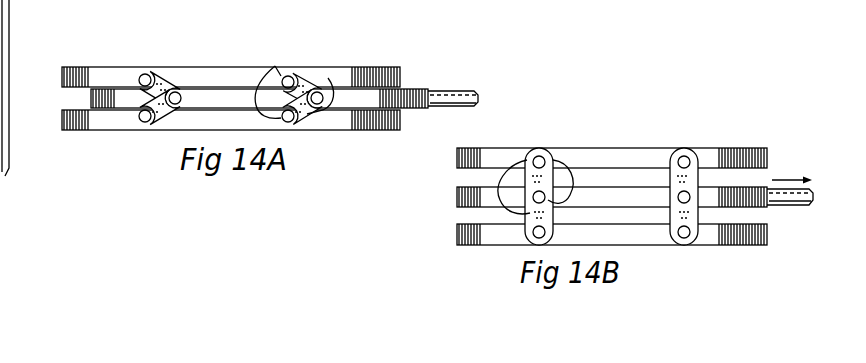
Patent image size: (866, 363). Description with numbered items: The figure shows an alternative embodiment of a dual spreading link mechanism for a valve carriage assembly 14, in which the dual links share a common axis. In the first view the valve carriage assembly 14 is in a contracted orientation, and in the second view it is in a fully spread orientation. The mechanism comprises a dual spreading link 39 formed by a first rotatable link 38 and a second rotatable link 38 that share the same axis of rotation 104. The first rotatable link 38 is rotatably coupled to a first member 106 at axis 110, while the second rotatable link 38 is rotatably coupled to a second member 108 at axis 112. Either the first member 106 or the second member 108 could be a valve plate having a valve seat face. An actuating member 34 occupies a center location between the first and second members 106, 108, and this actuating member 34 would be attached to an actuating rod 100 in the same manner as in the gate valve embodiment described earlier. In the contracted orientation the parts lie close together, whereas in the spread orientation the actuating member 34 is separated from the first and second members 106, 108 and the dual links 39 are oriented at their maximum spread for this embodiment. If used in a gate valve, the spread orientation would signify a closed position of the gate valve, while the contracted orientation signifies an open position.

In FIG. 14A, the valve carriage assembly 14 is at (417, 60).
In FIG. 14B, the valve carriage assembly 14 is at (748, 134).
In FIG. 14A, the actuating member 34 is at (91, 99).
In FIG. 14B, the actuating member 34 is at (457, 197).
In FIG. 14A, the rotatable link 38 is at (151, 74).
In FIG. 14B, the rotatable link 38 is at (665, 153).
In FIG. 14A, the dual spreading link 39 is at (275, 66).
In FIG. 14B, the dual spreading link 39 is at (528, 150).
In FIG. 14A, the actuating rod 100 is at (452, 90).
In FIG. 14A, the axis of rotation 104 is at (328, 78).
In FIG. 14B, the axis of rotation 104 is at (554, 152).
In FIG. 14A, the first member 106 is at (370, 67).
In FIG. 14B, the first member 106 is at (457, 160).
In FIG. 14A, the second member 108 is at (101, 122).
In FIG. 14B, the second member 108 is at (457, 233).
In FIG. 14A, the axis 110 is at (291, 78).
In FIG. 14B, the axis 110 is at (692, 155).
In FIG. 14A, the axis 112 is at (291, 122).
In FIG. 14B, the axis 112 is at (688, 247).